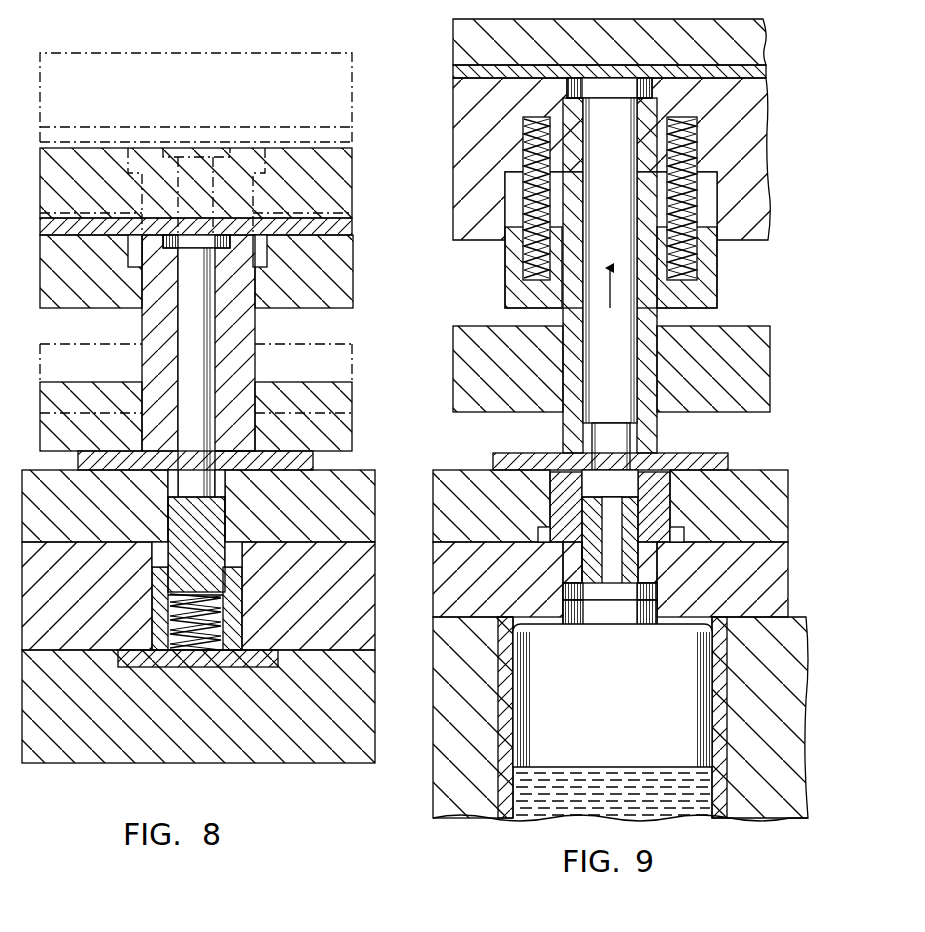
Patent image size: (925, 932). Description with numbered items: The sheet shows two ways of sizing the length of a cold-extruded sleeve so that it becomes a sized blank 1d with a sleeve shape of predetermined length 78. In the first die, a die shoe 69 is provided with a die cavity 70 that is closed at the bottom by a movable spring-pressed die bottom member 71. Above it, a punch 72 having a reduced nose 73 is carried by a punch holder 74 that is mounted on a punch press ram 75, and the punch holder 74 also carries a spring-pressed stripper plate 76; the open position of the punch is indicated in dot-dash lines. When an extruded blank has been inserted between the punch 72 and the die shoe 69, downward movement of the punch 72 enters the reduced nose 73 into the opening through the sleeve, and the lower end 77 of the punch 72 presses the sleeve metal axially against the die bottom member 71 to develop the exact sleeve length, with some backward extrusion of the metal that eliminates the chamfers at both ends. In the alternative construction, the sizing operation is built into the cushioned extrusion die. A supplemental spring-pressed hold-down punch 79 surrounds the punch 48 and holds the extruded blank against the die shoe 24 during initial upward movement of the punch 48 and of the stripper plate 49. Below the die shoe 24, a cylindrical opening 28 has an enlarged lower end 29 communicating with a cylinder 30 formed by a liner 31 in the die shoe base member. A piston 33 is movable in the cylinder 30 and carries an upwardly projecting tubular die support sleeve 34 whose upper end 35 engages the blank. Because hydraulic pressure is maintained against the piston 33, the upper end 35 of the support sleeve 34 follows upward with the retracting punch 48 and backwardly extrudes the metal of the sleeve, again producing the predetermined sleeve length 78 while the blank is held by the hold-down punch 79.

In FIG. 8, the punch press ram 75 is at (291, 178).
In FIG. 8, the punch holder 74 is at (312, 257).
In FIG. 8, the punch 72 is at (158, 333).
In FIG. 8, the reduced nose 73 is at (198, 428).
In FIG. 8, the spring-pressed stripper plate 76 is at (345, 400).
In FIG. 8, the lower end of punch 77 is at (245, 441).
In FIG. 8, the sized blank 1d is at (313, 466).
In FIG. 9, the sized blank 1d is at (683, 456).
In FIG. 8, the sleeve shape of predetermined length 78 is at (172, 494).
In FIG. 9, the sleeve shape of predetermined length 78 is at (640, 493).
In FIG. 8, the die cavity 70 is at (228, 512).
In FIG. 8, the spring-pressed die bottom member 71 is at (175, 523).
In FIG. 8, the die shoe 69 is at (338, 515).
In FIG. 9, the spring-pressed hold-down punch 79 is at (717, 288).
In FIG. 9, the punch 48 is at (620, 348).
In FIG. 9, the stripper plate 49 is at (745, 370).
In FIG. 9, the die shoe 24 is at (750, 492).
In FIG. 9, the upper end of support sleeve 35 is at (583, 498).
In FIG. 9, the tubular die support sleeve 34 is at (580, 560).
In FIG. 9, the cylindrical opening 28 is at (640, 563).
In FIG. 9, the enlarged lower end of opening 29 is at (660, 590).
In FIG. 9, the piston 33 is at (623, 712).
In FIG. 9, the cylinder 30 is at (712, 698).
In FIG. 9, the liner 31 is at (505, 780).